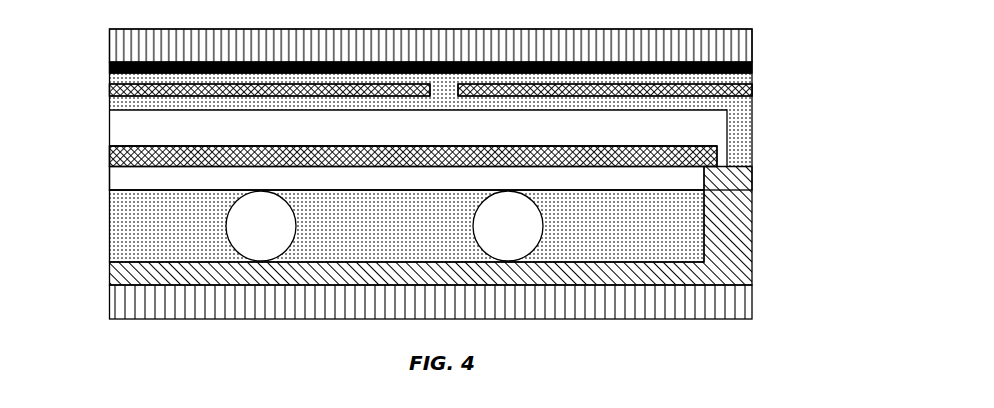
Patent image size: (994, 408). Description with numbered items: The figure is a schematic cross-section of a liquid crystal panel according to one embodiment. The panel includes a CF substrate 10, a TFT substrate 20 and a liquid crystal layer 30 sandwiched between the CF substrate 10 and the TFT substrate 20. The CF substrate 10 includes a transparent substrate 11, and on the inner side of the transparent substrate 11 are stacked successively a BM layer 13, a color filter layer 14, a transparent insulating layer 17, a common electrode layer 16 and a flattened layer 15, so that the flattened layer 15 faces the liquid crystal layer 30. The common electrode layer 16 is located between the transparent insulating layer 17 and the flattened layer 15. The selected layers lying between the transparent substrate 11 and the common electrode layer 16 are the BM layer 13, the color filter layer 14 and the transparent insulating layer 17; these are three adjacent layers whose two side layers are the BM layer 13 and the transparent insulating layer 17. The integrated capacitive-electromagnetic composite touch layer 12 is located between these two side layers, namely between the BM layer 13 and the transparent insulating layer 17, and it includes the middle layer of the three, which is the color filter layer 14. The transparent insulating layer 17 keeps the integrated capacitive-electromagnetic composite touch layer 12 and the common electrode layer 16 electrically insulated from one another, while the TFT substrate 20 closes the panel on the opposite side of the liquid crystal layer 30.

The CF substrate 10 is at (463, 98).
The transparent substrate 11 is at (431, 32).
The integrated capacitive-electromagnetic composite touch layer 12 is at (417, 120).
The BM layer 13 is at (752, 67).
The color filter layer 14 is at (752, 92).
The flattened layer 15 is at (590, 183).
The common electrode layer 16 is at (720, 158).
The transparent insulating layer 17 is at (598, 130).
The TFT substrate 20 is at (399, 243).
The liquid crystal layer 30 is at (142, 240).